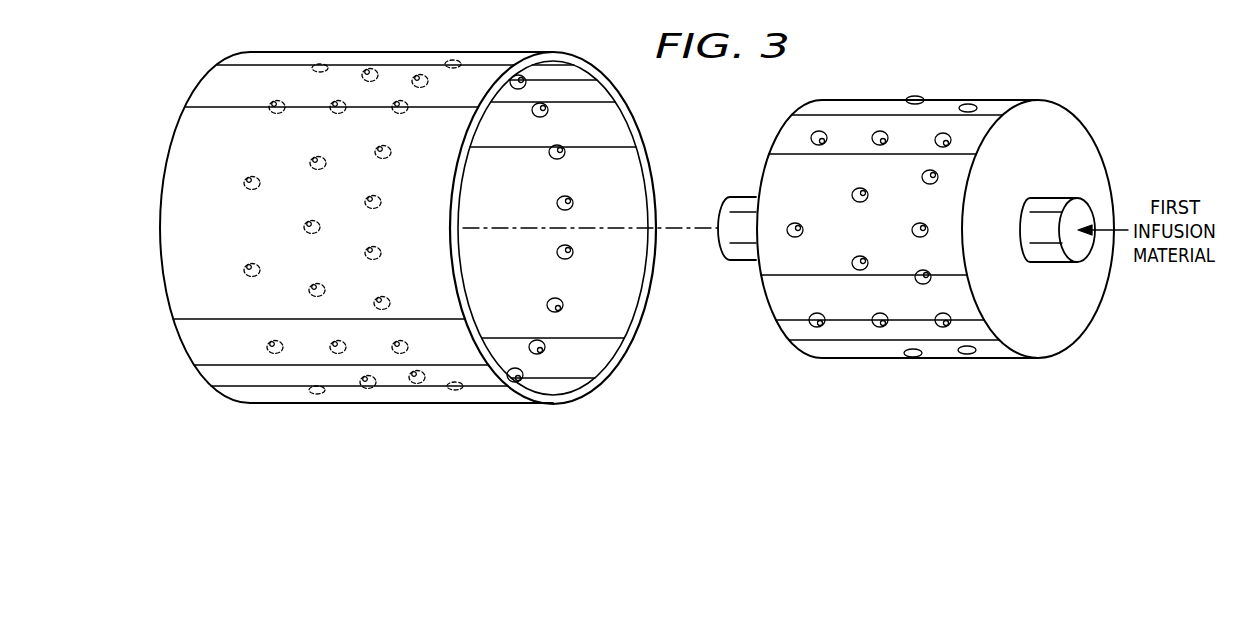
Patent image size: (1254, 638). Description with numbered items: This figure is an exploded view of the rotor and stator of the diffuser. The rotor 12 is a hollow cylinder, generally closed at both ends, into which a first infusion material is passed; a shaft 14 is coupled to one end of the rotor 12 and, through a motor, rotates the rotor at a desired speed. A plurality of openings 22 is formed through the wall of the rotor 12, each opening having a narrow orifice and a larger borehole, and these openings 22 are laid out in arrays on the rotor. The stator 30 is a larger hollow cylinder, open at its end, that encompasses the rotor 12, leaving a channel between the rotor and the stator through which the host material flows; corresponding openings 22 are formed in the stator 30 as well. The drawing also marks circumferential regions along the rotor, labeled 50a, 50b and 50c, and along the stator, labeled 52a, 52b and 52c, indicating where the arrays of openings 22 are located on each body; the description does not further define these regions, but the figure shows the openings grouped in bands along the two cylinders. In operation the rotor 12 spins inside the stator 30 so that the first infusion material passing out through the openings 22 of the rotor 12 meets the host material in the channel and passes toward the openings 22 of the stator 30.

The rotor 12 is at (1075, 133).
The shaft 14 is at (742, 197).
The openings 22 is at (368, 64).
The stator 30 is at (292, 52).
The first band section 50a is at (872, 373).
The second band section 50b is at (917, 99).
The third band section 50c is at (986, 373).
The first band section 52a is at (317, 408).
The second band section 52b is at (375, 408).
The third band section 52c is at (457, 408).